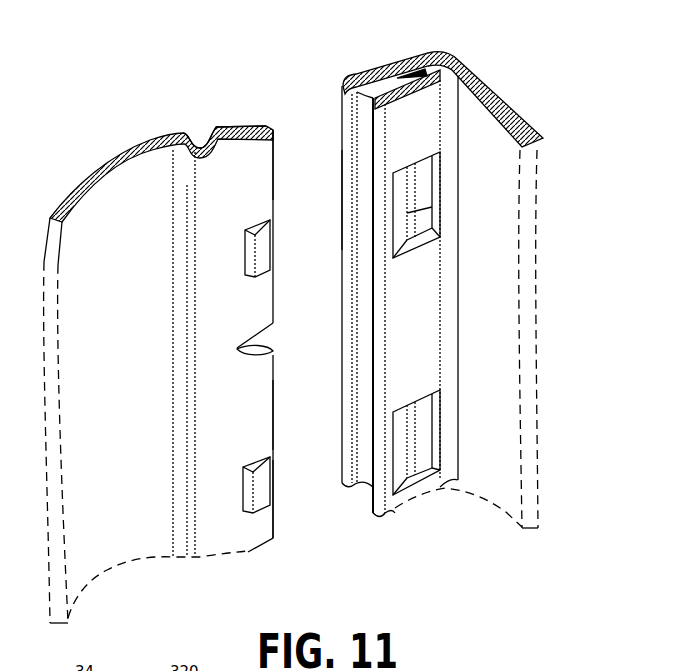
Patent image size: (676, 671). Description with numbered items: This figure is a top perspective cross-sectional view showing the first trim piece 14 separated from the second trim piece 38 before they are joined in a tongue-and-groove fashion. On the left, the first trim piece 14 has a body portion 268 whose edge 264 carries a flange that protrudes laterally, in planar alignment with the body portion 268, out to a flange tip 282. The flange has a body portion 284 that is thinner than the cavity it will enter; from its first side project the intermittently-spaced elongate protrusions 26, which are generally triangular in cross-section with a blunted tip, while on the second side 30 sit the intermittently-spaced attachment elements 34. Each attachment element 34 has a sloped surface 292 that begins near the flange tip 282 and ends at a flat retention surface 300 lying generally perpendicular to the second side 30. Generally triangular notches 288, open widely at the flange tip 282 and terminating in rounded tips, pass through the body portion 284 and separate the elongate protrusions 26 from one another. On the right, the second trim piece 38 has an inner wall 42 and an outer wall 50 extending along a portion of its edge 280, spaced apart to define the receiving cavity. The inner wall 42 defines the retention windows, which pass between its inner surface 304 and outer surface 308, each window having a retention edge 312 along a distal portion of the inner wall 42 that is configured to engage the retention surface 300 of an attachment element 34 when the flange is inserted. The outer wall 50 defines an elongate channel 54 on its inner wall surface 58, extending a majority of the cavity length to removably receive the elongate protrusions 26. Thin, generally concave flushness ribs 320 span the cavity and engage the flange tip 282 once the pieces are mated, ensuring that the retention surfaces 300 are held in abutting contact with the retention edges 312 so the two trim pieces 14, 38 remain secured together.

The first trim piece 14 is at (133, 343).
The intermittently-spaced elongate protrusions 26 is at (228, 127).
The second side 30 is at (242, 418).
The intermittently-spaced attachment elements 34 is at (275, 484).
The second trim piece 38 is at (493, 355).
The inner wall 42 is at (458, 90).
The outer wall 50 is at (348, 78).
The elongate channel 54 is at (386, 77).
The inner wall surface 58 is at (366, 110).
The edge 264 is at (186, 132).
The body portion 268 is at (112, 522).
The edge 280 is at (340, 200).
The flange tip 282 is at (275, 147).
The body portion 284 is at (210, 132).
The notches 288 is at (246, 350).
The sloped surface 292 is at (257, 262).
The retention surface 300 is at (243, 490).
The inner surface 304 is at (455, 180).
The outer surface 308 is at (422, 177).
The retention edge 312 is at (408, 213).
The flushness ribs 320 is at (352, 92).